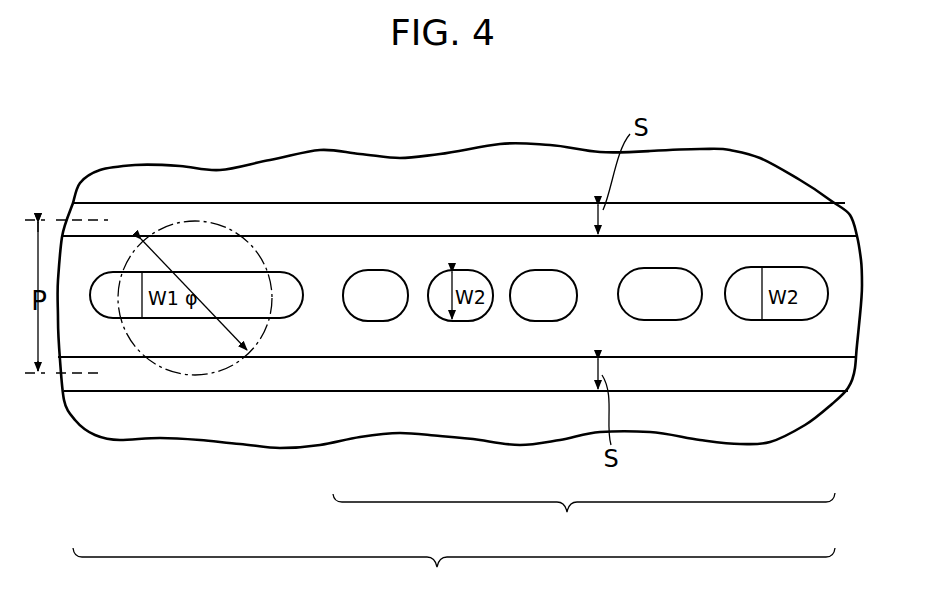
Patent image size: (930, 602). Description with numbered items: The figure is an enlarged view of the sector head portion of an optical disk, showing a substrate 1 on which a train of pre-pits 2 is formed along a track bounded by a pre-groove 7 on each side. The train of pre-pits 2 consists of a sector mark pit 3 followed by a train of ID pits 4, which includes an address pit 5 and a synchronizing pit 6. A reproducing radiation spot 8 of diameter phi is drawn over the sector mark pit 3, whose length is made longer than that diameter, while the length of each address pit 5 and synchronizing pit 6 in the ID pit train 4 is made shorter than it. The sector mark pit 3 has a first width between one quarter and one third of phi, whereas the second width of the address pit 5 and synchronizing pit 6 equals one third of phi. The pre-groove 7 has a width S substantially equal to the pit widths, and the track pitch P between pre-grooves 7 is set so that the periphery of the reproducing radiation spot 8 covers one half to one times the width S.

The substrate 1 is at (287, 177).
The train of pre-pits 2 is at (454, 575).
The sector mark pit 3 is at (288, 284).
The train of ID pits 4 is at (584, 524).
The address pit 5 is at (660, 311).
The synchronizing pit 6 is at (372, 315).
The pre-groove 7 is at (713, 214).
The reproducing radiation spot 8 is at (180, 222).